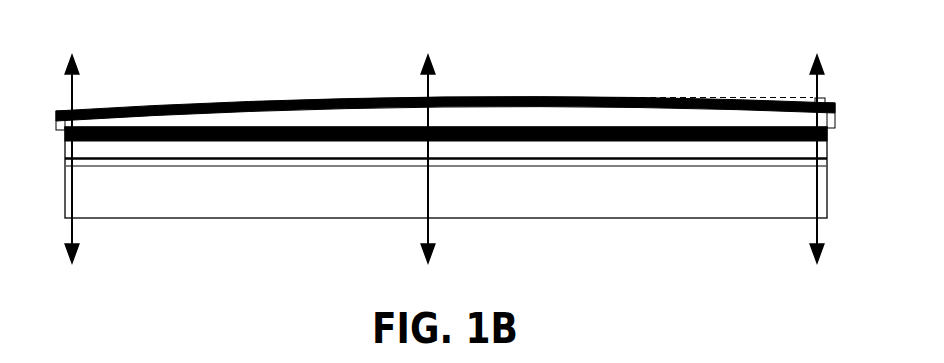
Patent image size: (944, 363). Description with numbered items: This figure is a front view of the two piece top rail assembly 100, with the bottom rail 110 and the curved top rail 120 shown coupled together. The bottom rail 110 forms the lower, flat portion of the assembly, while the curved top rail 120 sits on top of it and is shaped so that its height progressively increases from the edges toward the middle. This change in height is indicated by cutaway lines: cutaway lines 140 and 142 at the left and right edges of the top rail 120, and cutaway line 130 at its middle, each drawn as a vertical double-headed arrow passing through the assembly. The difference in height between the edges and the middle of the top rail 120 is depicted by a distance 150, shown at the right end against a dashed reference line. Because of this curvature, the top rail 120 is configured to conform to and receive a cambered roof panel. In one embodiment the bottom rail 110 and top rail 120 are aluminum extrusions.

The two piece top rail assembly 100 is at (612, 80).
The bottom rail 110 is at (612, 206).
The curved top rail 120 is at (509, 124).
The cutaway line 130 is at (428, 145).
The cutaway line 140 is at (72, 145).
The cutaway line 142 is at (817, 145).
The distance 150 is at (825, 104).